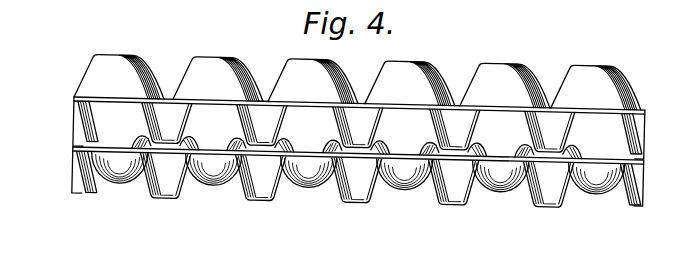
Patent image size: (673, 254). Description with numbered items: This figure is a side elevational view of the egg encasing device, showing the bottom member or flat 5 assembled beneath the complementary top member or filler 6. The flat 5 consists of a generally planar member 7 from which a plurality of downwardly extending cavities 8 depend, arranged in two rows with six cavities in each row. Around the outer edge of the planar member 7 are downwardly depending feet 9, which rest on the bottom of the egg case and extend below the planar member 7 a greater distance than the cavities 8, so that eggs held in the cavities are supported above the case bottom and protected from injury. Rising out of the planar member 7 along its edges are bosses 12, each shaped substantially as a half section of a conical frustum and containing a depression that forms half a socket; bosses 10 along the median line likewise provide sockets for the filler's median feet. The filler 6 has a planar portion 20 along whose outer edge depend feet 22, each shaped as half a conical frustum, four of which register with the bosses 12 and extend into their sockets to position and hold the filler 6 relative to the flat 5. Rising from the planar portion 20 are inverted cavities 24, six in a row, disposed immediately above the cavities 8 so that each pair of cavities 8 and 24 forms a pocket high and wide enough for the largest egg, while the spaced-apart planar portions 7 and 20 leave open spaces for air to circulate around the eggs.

The bottom member 5 is at (309, 191).
The top member 6 is at (479, 62).
The planar member 7 is at (476, 156).
The cavities 8 is at (107, 183).
The feet 9 is at (80, 173).
The bosses 10 is at (145, 140).
The bosses 12 is at (240, 142).
The planar portion 20 is at (266, 99).
The feet 22 is at (551, 107).
The inverted cavities 24 is at (198, 57).